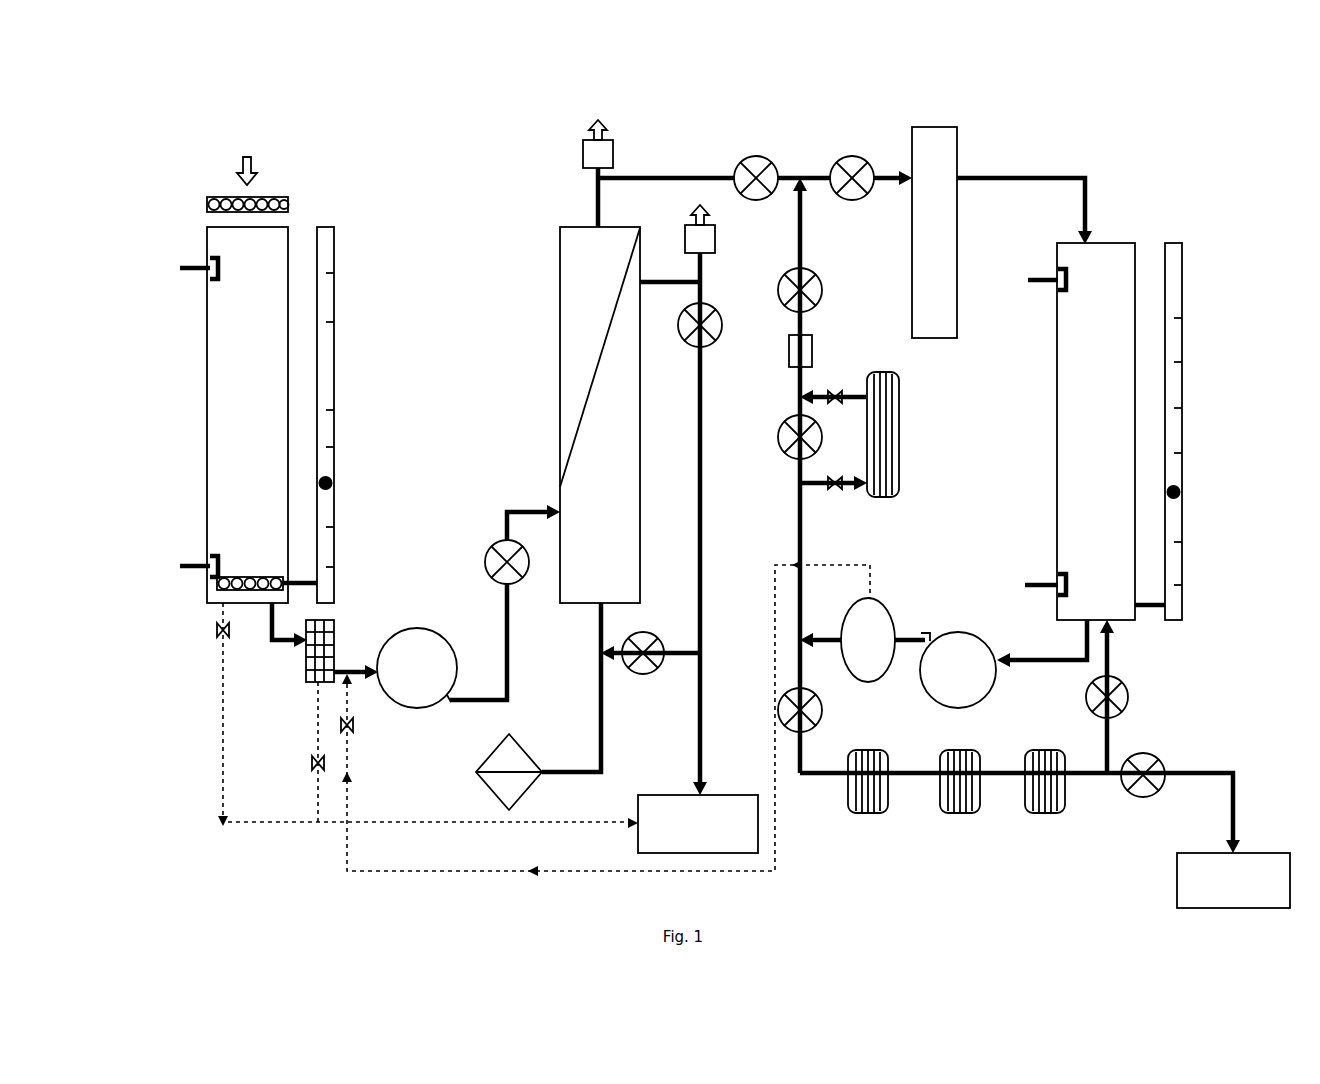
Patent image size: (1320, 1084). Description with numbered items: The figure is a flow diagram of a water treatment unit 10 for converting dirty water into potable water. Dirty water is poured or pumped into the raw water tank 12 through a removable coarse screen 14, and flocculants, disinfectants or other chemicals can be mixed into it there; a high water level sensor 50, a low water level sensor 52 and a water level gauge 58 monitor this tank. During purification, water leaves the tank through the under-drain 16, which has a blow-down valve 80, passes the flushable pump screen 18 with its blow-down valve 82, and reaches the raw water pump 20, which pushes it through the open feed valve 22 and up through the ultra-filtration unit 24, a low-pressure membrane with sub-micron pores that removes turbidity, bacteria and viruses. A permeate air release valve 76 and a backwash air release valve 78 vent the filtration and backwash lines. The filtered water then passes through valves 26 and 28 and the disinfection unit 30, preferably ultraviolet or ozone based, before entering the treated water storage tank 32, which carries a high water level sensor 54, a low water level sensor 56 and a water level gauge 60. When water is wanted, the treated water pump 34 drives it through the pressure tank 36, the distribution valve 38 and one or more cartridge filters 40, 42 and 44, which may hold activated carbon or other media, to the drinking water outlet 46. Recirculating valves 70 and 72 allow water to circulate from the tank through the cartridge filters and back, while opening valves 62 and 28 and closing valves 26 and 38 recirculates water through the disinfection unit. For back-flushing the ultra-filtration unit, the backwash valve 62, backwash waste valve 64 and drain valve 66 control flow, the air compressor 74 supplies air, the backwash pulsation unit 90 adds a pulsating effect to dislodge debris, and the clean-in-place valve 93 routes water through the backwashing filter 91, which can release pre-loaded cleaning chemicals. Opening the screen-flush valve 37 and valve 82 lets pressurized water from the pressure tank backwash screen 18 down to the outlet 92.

The water treatment unit 10 is at (1128, 122).
The raw water tank 12 is at (247, 415).
The screen 14 is at (283, 197).
The under-drain 16 is at (276, 579).
The pump screen 18 is at (336, 626).
The pump 20 is at (417, 668).
The valve 22 is at (497, 553).
The ultra-filtration unit 24 is at (600, 415).
The valve 26 is at (750, 164).
The valve 28 is at (856, 160).
The disinfection unit 30 is at (934, 232).
The treated water storage tank 32 is at (1096, 431).
The pump 34 is at (958, 670).
The pressure tank 36 is at (868, 640).
The valve 37 is at (355, 728).
The valve 38 is at (820, 712).
The cartridge filter 40 is at (868, 816).
The cartridge filter 42 is at (965, 816).
The cartridge filter 44 is at (1046, 816).
The outlet 46 is at (1233, 880).
The high water level sensor 50 is at (180, 268).
The low water level sensor 52 is at (190, 563).
The high water level sensor 54 is at (1032, 278).
The low water level sensor 56 is at (1030, 583).
The water level gauge 58 is at (328, 445).
The water level gauge 60 is at (1180, 432).
The valve 62 is at (810, 280).
The valve 64 is at (712, 320).
The valve 66 is at (649, 670).
The valve 70 is at (1120, 695).
The valve 72 is at (1156, 768).
The air compressor 74 is at (519, 752).
The permeate air release valve 76 is at (606, 148).
The backwash air release valve 78 is at (703, 250).
The blow-down valve 80 is at (218, 640).
The valve 82 is at (312, 766).
The backwash pulsation unit 90 is at (788, 352).
The backwashing filter 91 is at (890, 437).
The outlet 92 is at (698, 824).
The backwash filter valve 93 is at (797, 459).